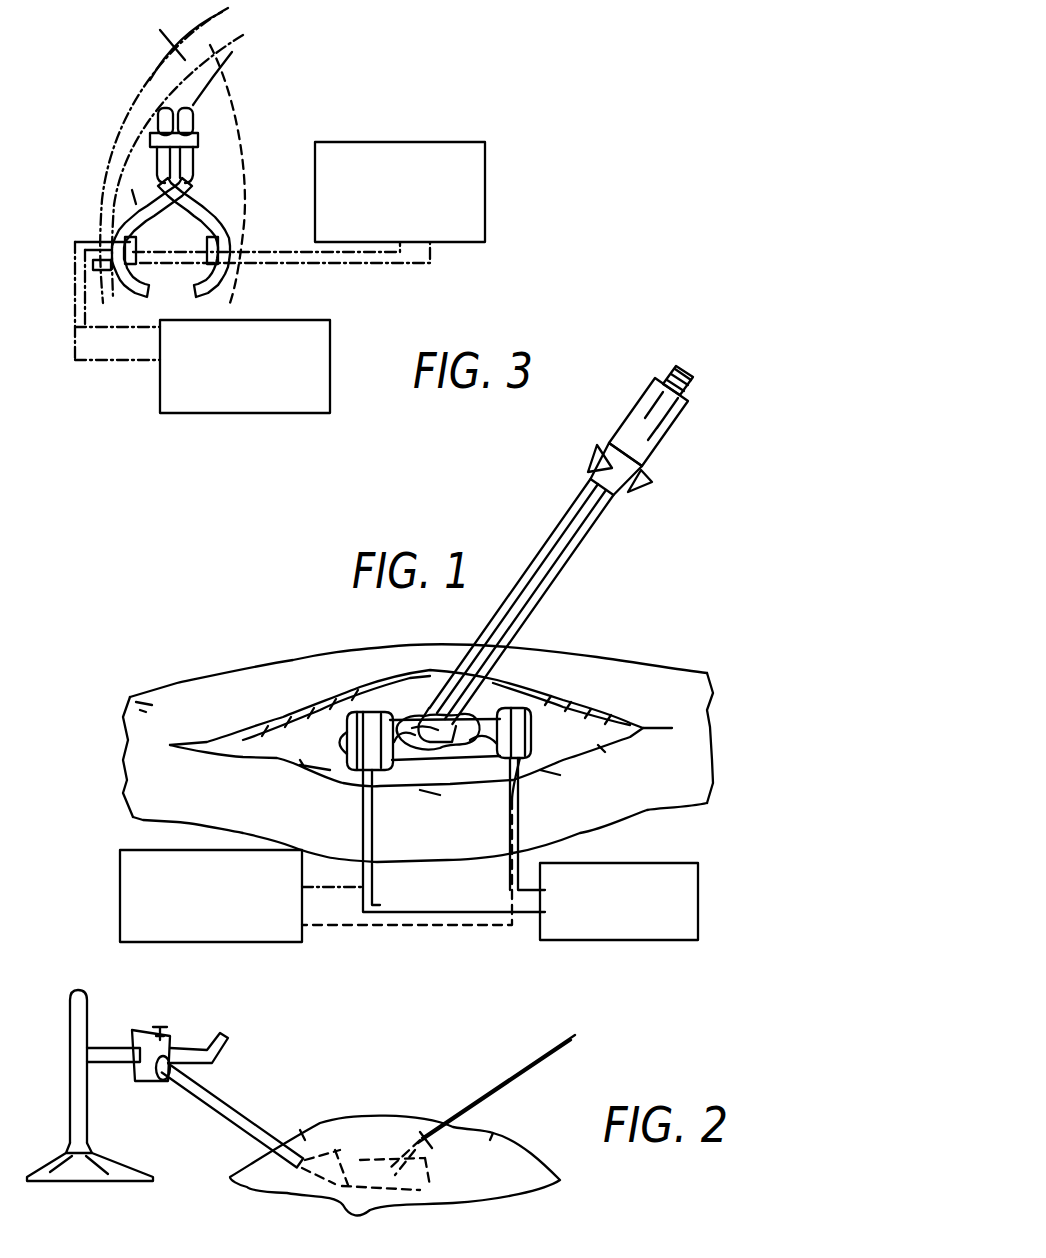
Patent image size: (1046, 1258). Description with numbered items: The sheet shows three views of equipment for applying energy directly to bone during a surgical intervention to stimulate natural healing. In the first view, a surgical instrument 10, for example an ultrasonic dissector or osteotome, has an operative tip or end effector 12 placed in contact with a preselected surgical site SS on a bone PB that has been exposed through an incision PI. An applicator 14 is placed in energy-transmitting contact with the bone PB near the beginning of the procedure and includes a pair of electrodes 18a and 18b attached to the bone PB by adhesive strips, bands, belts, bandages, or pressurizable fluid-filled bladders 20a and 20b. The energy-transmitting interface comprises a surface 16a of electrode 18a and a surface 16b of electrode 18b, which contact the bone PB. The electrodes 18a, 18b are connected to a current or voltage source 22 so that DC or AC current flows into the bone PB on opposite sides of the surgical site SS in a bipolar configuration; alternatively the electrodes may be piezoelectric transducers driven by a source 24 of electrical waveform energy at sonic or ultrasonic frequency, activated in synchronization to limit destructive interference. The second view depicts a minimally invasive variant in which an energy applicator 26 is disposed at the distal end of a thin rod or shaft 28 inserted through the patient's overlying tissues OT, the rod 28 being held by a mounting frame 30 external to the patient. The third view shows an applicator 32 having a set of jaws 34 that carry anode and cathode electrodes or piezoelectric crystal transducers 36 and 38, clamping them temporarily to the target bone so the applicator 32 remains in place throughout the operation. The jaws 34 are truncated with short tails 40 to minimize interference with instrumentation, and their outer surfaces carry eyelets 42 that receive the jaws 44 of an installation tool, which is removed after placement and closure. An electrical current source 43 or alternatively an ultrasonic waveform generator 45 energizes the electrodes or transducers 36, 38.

In FIG. 1, the surgical instrument 10 is at (670, 453).
In FIG. 1, the operative tip or end effector 12 is at (442, 752).
In FIG. 1, the applicator 14 is at (353, 782).
In FIG. 1, the surface of electrode 18a 16a is at (333, 706).
In FIG. 1, the surface of electrode 18b 16b is at (528, 756).
In FIG. 1, the electrode 18a is at (366, 712).
In FIG. 1, the electrode 18b is at (540, 778).
In FIG. 1, the adhesive strip, band, belt, bandage, or pressurizable fluid-filled bladder 20a is at (345, 748).
In FIG. 1, the adhesive strip, band, belt, bandage, or pressurizable fluid-filled bladder 20b is at (520, 732).
In FIG. 1, the current or voltage source 22 is at (699, 901).
In FIG. 1, the source of electrical waveform energy 24 is at (120, 868).
In FIG. 2, the energy applicator 26 is at (346, 1150).
In FIG. 2, the thin rod or shaft 28 is at (250, 1120).
In FIG. 2, the mounting frame 30 is at (128, 1073).
In FIG. 3, the applicator 32 is at (220, 202).
In FIG. 3, the jaws 34 is at (133, 184).
In FIG. 3, the electrode or transducer 36 is at (128, 292).
In FIG. 3, the electrode or transducer 38 is at (214, 246).
In FIG. 3, the short tails 40 is at (172, 119).
In FIG. 3, the eyelets 42 is at (246, 266).
In FIG. 3, the electrical current source 43 is at (372, 140).
In FIG. 3, the jaws of installation tool 44 is at (150, 73).
In FIG. 3, the ultrasonic waveform generator 45 is at (330, 348).
In FIG. 1, the bone PB is at (314, 736).
In FIG. 1, the incision PI is at (568, 712).
In FIG. 1, the surgical site SS is at (413, 730).
In FIG. 2, the overlying tissues OT is at (325, 1120).